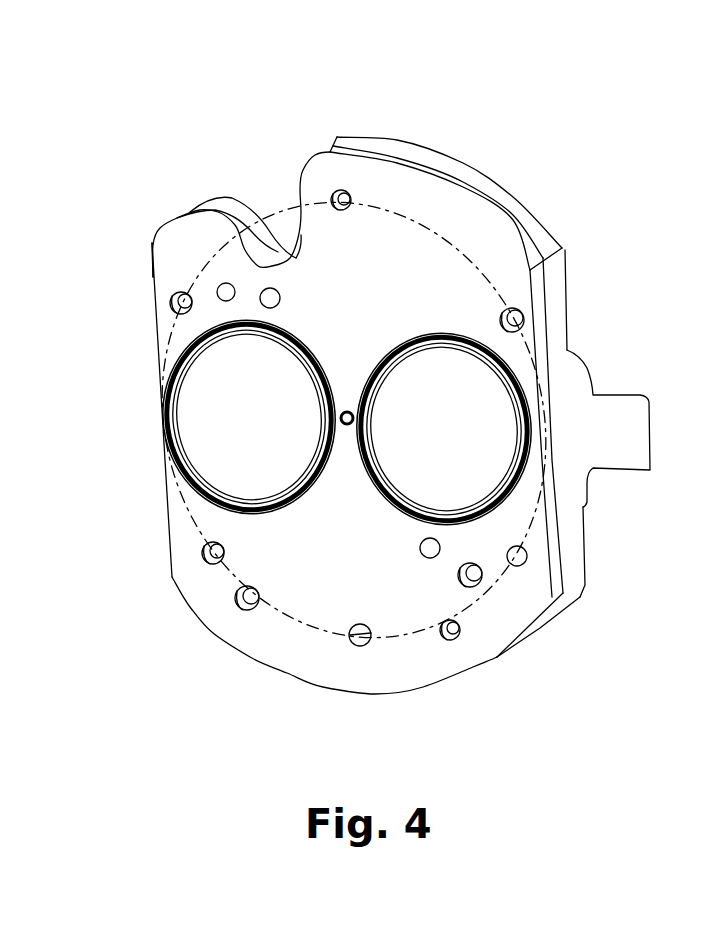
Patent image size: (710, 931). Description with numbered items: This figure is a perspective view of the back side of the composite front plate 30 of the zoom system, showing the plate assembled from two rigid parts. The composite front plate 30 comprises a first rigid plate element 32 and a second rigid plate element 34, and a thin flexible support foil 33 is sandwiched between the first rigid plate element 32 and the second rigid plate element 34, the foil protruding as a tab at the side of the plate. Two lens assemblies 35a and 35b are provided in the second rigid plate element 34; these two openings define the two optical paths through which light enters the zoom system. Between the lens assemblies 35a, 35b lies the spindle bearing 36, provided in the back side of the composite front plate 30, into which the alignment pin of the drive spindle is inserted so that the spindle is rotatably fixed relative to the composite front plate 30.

The composite front plate 30 is at (548, 145).
The first rigid plate element 32 is at (333, 583).
The flexible support foil 33 is at (568, 400).
The second rigid plate element 34 is at (523, 222).
The lens assembly 35a is at (233, 425).
The lens assembly 35b is at (468, 448).
The spindle bearing 36 is at (345, 400).